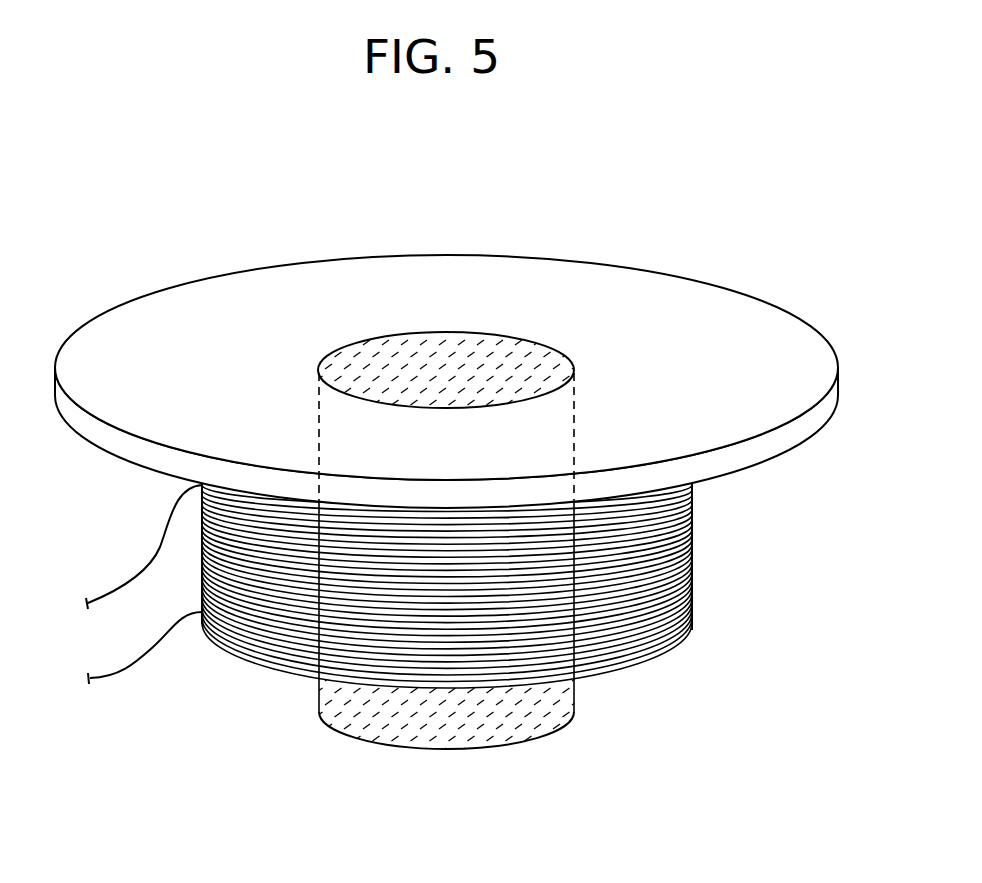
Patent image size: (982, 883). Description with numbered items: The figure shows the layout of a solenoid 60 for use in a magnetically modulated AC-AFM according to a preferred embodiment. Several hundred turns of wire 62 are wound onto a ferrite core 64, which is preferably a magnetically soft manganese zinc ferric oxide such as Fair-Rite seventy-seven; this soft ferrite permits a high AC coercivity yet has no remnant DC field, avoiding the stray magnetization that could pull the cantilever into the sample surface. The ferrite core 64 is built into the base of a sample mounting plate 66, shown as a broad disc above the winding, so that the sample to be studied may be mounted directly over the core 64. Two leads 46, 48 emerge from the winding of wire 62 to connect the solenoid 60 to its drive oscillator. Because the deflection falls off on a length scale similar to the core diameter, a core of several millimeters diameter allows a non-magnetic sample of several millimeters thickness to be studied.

The solenoid 60 is at (613, 236).
The wire 62 is at (693, 599).
The ferrite core 64 is at (389, 352).
The sample mounting plate 66 is at (778, 337).
The lead wire 46 is at (117, 677).
The lead wire 48 is at (128, 584).